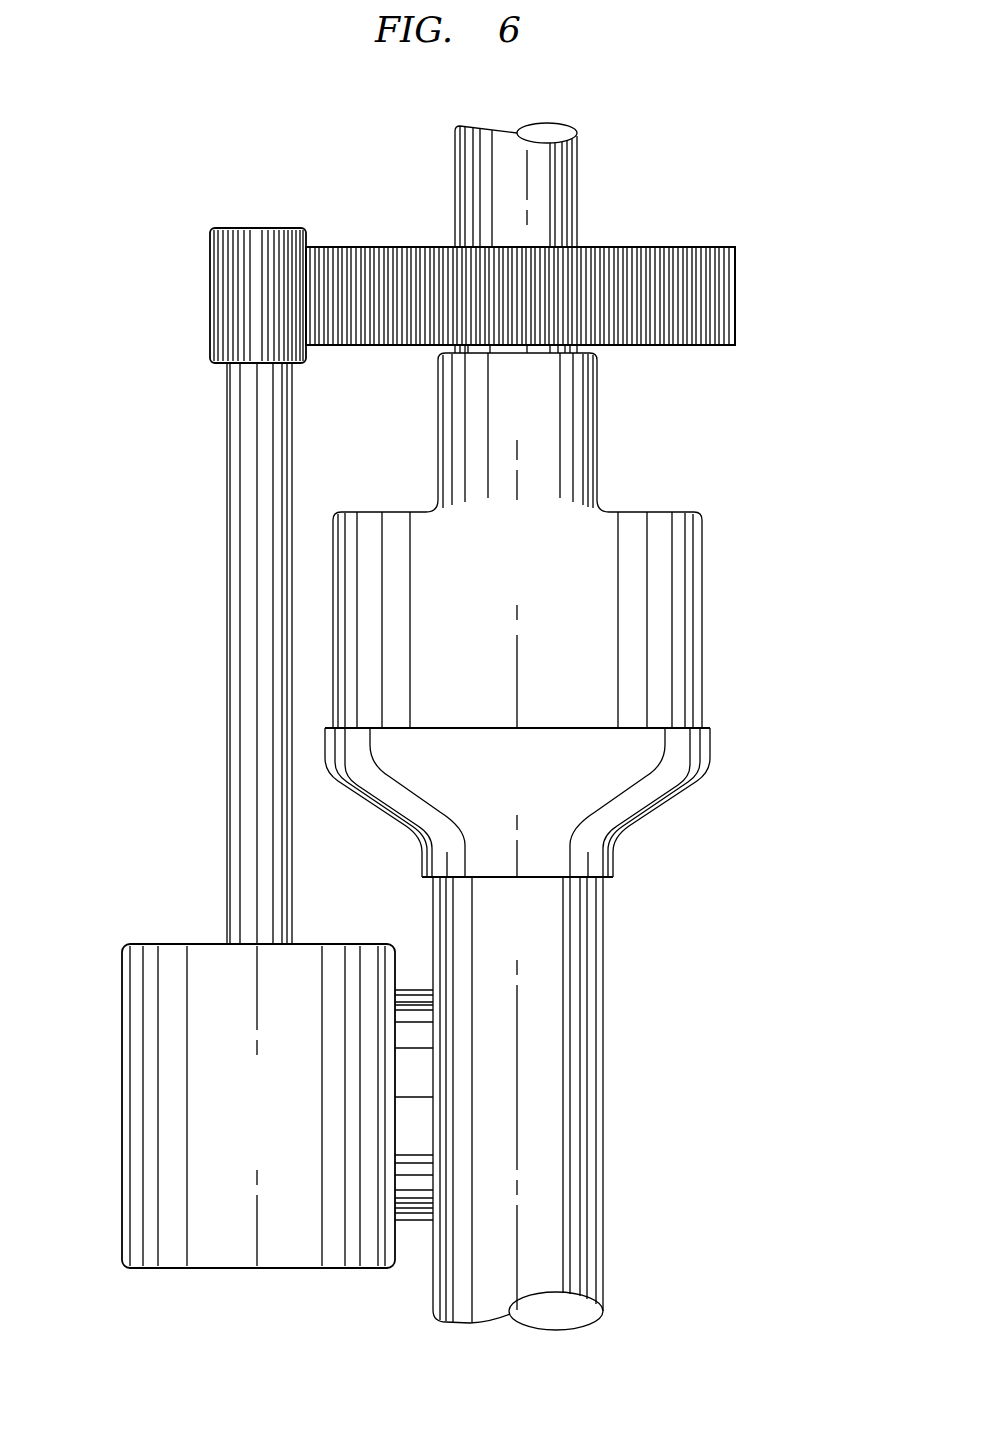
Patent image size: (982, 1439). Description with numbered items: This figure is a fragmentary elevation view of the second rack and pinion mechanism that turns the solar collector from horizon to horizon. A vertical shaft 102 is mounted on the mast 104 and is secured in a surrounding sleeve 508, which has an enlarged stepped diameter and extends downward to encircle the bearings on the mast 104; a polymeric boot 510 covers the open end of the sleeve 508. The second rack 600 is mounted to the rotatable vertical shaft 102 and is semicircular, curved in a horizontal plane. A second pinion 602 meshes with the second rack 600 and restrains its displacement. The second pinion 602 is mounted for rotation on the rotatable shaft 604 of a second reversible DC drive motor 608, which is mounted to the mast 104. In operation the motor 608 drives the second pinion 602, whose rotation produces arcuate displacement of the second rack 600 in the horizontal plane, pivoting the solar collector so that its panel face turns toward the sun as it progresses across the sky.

The vertical shaft 102 is at (568, 176).
The mast 104 is at (585, 1112).
The sleeve 508 is at (687, 582).
The polymeric boot 510 is at (680, 767).
The second rack 600 is at (735, 297).
The second pinion 602 is at (220, 292).
The rotatable shaft 604 is at (240, 624).
The second reversible DC drive motor 608 is at (135, 1093).